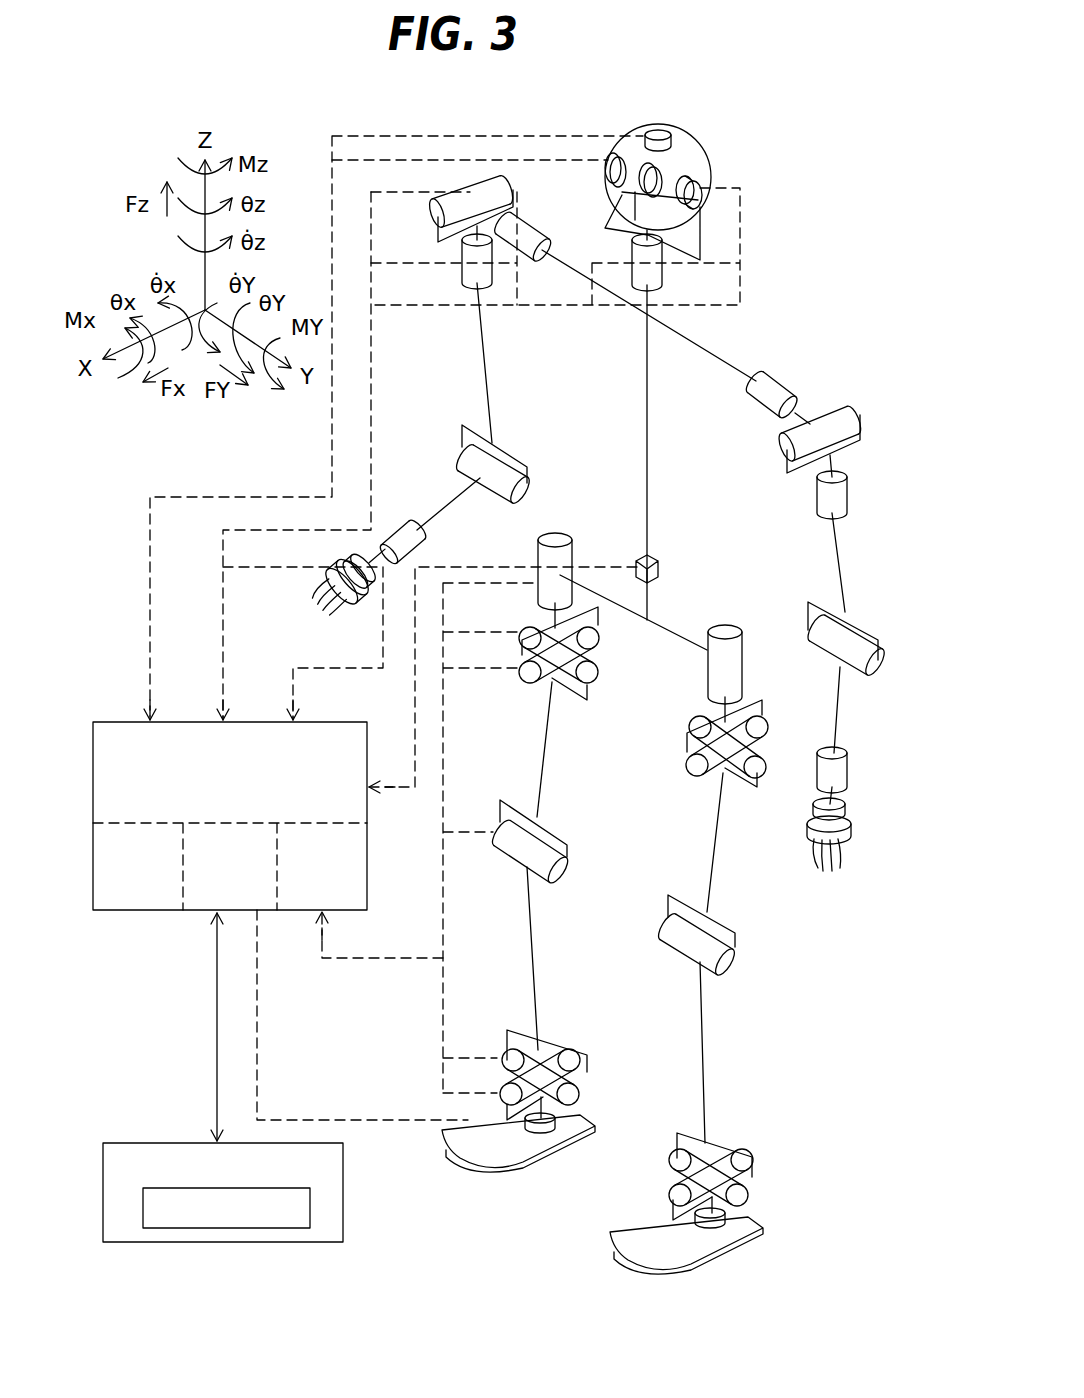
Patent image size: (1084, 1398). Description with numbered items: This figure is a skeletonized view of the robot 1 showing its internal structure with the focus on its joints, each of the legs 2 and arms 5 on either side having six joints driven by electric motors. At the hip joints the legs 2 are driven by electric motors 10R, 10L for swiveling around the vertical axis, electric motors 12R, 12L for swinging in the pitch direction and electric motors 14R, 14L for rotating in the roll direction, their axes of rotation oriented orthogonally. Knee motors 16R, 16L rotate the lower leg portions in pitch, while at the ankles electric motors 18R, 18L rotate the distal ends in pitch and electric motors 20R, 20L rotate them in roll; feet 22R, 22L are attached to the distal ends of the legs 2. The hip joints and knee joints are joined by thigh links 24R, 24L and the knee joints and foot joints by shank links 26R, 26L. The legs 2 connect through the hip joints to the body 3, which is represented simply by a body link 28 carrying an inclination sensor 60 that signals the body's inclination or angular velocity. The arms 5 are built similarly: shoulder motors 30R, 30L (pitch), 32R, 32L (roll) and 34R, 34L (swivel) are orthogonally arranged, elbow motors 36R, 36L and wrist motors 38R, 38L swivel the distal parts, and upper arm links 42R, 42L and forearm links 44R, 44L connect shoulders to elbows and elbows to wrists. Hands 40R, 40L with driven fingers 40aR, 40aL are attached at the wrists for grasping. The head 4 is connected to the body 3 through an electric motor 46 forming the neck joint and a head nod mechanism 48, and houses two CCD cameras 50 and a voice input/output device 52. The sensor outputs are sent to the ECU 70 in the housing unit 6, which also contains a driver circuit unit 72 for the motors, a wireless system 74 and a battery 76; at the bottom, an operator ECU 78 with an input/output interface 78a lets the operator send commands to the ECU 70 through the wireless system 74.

The robot 1 is at (791, 306).
The legs 2 is at (747, 905).
The body 3 is at (669, 431).
The head 4 is at (619, 123).
The arms 5 is at (873, 601).
The housing unit 6 is at (135, 722).
The electric motor 10R is at (556, 540).
The electric motor 10L is at (742, 660).
The electric motor 12R is at (523, 634).
The electric motor 12L is at (755, 770).
The electric motor 14R is at (522, 690).
The electric motor 14L is at (762, 716).
The electric motor 16R is at (568, 868).
The electric motor 16L is at (738, 961).
The electric motor 18R is at (578, 1095).
The electric motor 18L is at (748, 1190).
The electric motor 20R is at (575, 1050).
The electric motor 20L is at (740, 1150).
The foot 22R is at (505, 1157).
The foot 22L is at (765, 1226).
The thigh link 24R is at (542, 782).
The thigh link 24L is at (716, 856).
The shank link 26R is at (528, 925).
The shank link 26L is at (706, 1043).
The body link 28 is at (650, 494).
The electric motor 30R is at (521, 228).
The electric motor 30L is at (762, 380).
The electric motor 32R is at (498, 190).
The electric motor 32L is at (843, 412).
The electric motor 34R is at (467, 272).
The electric motor 34L is at (845, 493).
The electric motor 36R is at (527, 478).
The electric motor 36L is at (878, 656).
The electric motor 38R is at (420, 538).
The electric motor 38L is at (847, 768).
The hand 40R is at (352, 599).
The hand 40L is at (871, 857).
The fingers 40aR is at (365, 610).
The fingers 40aL is at (857, 871).
The upper arm link 42R is at (494, 382).
The upper arm link 42L is at (842, 545).
The forearm link 44R is at (452, 500).
The forearm link 44L is at (838, 720).
The electric motor 46 is at (655, 272).
The head nod mechanism 48 is at (703, 197).
The CCD cameras 50 is at (643, 226).
The voice input/output device 52 is at (656, 128).
The inclination sensor 60 is at (660, 570).
The electronic control unit 70 is at (230, 816).
The driver circuit unit 72 is at (135, 870).
The wireless system 74 is at (230, 870).
The battery 76 is at (322, 856).
The operator ECU 78 is at (343, 1170).
The input/output interface 78a is at (310, 1218).